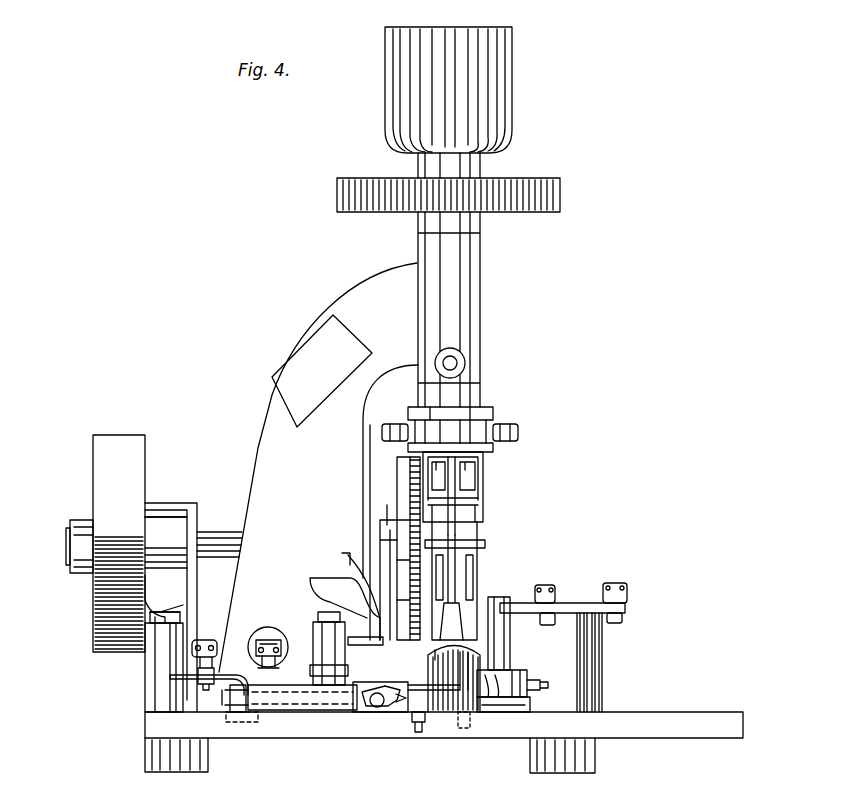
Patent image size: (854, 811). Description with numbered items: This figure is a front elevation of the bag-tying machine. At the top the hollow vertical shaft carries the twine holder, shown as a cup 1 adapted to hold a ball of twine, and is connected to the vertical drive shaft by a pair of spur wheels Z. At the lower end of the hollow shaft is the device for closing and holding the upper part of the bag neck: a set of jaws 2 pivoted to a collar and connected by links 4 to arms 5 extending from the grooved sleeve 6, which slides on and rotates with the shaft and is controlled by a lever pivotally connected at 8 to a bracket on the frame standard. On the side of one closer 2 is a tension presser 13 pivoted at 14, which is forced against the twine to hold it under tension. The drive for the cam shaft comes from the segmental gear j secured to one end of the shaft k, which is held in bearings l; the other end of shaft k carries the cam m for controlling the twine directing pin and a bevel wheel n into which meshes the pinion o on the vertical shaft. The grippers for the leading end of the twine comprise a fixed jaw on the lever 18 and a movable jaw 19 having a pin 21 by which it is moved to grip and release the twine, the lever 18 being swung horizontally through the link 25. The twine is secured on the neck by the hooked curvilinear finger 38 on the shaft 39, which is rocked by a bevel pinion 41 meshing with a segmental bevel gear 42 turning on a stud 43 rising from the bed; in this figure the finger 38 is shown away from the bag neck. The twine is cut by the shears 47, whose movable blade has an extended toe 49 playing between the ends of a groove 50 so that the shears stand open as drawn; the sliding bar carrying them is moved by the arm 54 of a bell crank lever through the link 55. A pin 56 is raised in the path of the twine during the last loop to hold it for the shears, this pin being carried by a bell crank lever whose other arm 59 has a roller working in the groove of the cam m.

The twine holder cup 1 is at (506, 103).
The spur wheels Z is at (562, 190).
The grooved sleeve 6 is at (494, 412).
The pivot of lever 8 is at (322, 379).
The segmental gear j is at (100, 452).
The bearings l is at (160, 510).
The shaft k is at (208, 538).
The cam m is at (398, 468).
The arm of bell crank lever 59 is at (387, 562).
The arms 5 is at (474, 477).
The links 4 is at (454, 492).
The pivot of tension presser 14 is at (486, 543).
The tension presser 13 is at (456, 588).
The jaws 2 is at (473, 598).
The link 25 is at (545, 588).
The pin 21 is at (528, 671).
The movable jaw 19 is at (523, 697).
The stud 43 is at (167, 617).
The bevel pinion 41 is at (243, 674).
The segmental bevel gear 42 is at (160, 660).
The shaft 39 is at (228, 706).
The link 55 is at (295, 676).
The arm of bell crank lever 54 is at (313, 667).
The lever 18 is at (372, 645).
The toe 49 is at (368, 718).
The shears 47 is at (393, 702).
The groove 50 is at (393, 722).
The pin 56 is at (425, 718).
The curvilinear finger 38 is at (468, 714).
The bevel wheel n is at (401, 644).
The pinion o is at (436, 655).